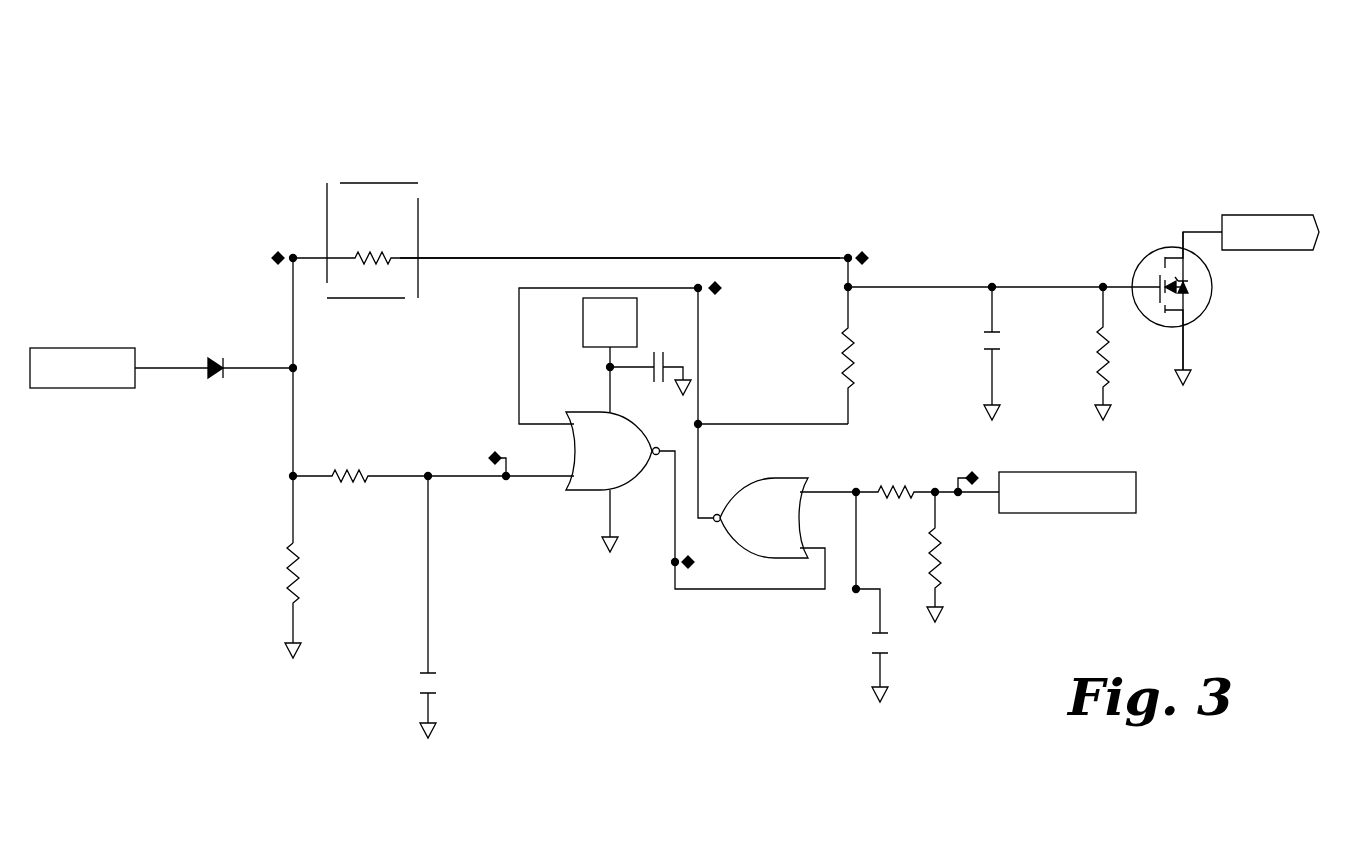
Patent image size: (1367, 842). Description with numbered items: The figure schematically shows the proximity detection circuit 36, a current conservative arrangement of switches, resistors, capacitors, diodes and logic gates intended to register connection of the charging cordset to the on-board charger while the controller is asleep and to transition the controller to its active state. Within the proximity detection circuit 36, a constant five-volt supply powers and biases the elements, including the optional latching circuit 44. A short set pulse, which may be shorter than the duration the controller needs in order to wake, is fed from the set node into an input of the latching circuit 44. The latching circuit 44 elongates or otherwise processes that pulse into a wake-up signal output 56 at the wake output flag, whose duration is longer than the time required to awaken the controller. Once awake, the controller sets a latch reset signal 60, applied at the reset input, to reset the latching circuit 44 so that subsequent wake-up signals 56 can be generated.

The proximity detection circuit 36 is at (1160, 112).
The latching circuit 44 is at (732, 247).
The WAKE_UP signal output 56 is at (1265, 250).
The LATCH_RESET signal 60 is at (1065, 513).